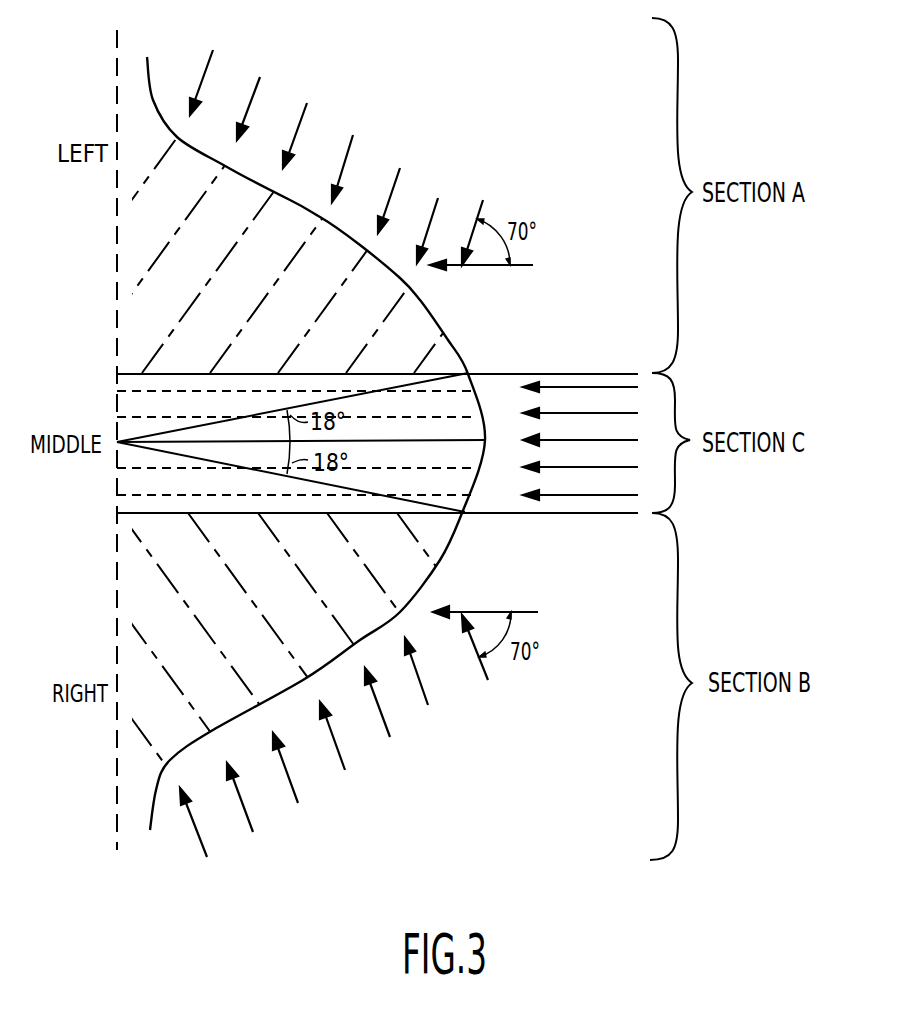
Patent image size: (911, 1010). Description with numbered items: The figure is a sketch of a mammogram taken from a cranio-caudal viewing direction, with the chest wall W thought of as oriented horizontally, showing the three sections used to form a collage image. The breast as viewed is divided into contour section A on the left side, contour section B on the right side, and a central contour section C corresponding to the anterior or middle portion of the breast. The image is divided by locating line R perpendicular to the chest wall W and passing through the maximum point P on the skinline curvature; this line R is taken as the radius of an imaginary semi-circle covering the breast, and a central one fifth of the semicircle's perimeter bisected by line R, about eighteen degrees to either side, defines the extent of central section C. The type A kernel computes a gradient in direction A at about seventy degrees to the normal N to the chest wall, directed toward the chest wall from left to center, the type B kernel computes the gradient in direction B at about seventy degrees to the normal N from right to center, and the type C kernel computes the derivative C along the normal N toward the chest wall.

The contour section A is at (395, 182).
The contour section B is at (383, 712).
The central contour section C is at (612, 440).
The normal to the chest wall N is at (497, 441).
The maximum point on the skinline curvature P is at (488, 440).
The line R is at (358, 440).
The chest wall W is at (147, 613).